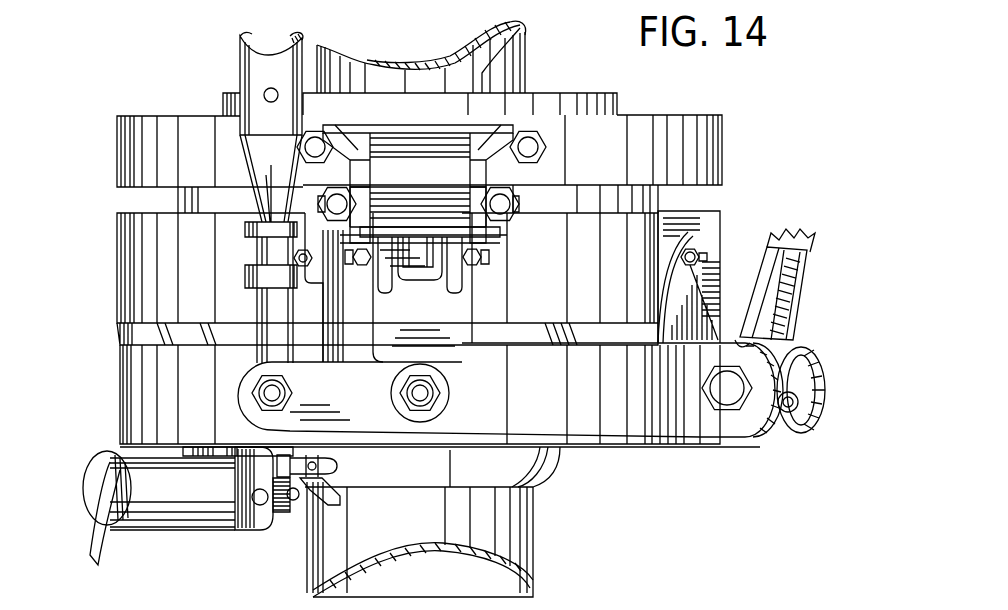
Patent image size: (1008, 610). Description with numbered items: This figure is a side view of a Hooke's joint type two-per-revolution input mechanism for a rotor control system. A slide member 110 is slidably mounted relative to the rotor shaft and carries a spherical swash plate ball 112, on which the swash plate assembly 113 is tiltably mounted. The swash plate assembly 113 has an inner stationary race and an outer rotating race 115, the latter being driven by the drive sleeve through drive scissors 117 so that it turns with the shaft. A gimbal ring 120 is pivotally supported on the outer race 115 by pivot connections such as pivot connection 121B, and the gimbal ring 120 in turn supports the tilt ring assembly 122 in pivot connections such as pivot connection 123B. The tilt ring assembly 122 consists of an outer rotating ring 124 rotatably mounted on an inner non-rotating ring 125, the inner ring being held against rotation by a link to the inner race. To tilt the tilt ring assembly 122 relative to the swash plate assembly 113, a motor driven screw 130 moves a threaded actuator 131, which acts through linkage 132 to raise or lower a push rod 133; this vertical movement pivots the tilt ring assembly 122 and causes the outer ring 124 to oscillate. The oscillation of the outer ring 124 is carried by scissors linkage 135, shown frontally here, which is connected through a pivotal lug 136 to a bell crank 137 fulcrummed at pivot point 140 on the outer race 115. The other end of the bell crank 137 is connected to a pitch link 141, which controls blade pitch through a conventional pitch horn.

The slide member 110 is at (546, 545).
The swash plate ball 112 is at (550, 462).
The swash plate assembly 113 is at (110, 393).
The outer rotating race 115 is at (552, 421).
The drive scissors 117 is at (800, 232).
The gimbal ring 120 is at (140, 283).
The pivot connection 121B is at (295, 258).
The tilt ring assembly 122 is at (112, 157).
The pivot connection 123B is at (722, 258).
The outer rotating ring 124 is at (722, 116).
The inner non-rotating ring 125 is at (594, 98).
The motor driven screw 130 is at (295, 500).
The threaded actuator 131 is at (284, 518).
The linkage 132 is at (312, 482).
The push rod 133 is at (318, 456).
The scissors linkage 135 is at (520, 210).
The pivotal lug 136 is at (480, 256).
The bell crank 137 is at (368, 404).
The pivot point 140 is at (445, 391).
The pitch link 141 is at (262, 62).